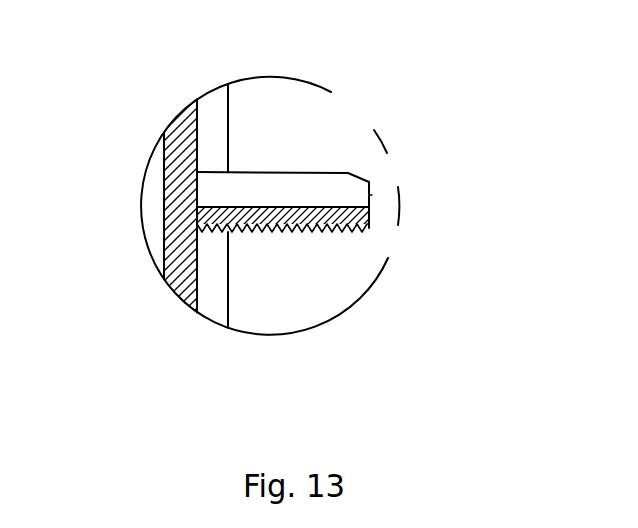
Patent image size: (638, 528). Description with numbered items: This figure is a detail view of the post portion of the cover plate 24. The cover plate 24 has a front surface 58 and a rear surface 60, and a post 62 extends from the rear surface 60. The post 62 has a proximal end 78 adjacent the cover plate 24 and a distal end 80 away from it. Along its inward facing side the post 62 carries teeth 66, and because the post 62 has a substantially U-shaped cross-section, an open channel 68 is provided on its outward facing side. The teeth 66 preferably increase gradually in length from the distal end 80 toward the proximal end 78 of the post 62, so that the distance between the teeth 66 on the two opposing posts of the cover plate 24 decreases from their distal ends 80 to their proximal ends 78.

The cover plate 24 is at (137, 142).
The front surface 58 is at (164, 200).
The rear surface 60 is at (197, 290).
The post 62 is at (285, 173).
The teeth 66 is at (265, 233).
The open channel 68 is at (308, 192).
The proximal end 78 is at (199, 171).
The distal end 80 is at (372, 195).